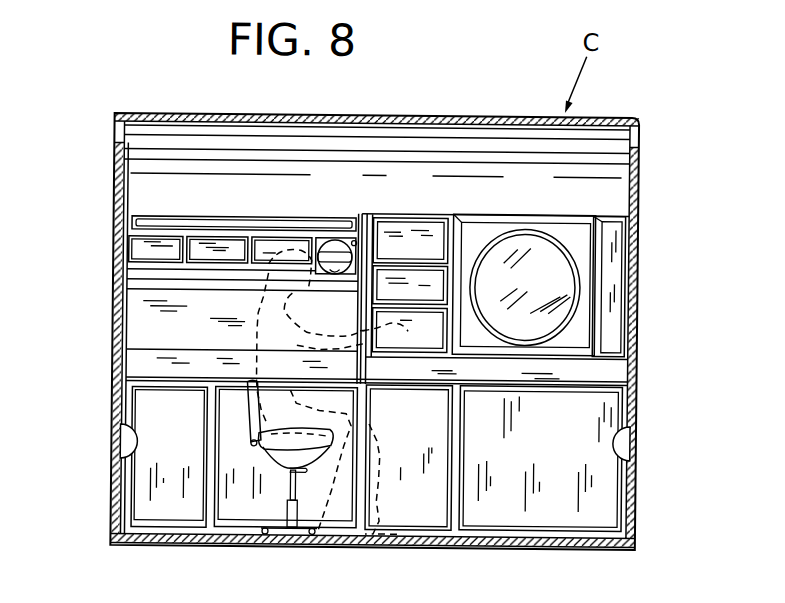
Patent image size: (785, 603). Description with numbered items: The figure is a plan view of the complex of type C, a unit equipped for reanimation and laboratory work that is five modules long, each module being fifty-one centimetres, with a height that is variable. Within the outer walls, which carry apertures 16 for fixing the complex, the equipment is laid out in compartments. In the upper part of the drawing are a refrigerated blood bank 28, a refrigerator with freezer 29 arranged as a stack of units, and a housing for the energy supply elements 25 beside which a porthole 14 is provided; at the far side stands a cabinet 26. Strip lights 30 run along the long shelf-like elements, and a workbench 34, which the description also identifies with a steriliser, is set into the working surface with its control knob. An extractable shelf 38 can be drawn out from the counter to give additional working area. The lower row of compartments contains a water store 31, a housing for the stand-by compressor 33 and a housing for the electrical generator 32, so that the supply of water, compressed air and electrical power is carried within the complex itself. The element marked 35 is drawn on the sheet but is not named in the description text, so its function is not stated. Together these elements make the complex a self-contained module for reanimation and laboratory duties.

The porthole 14 is at (547, 268).
The apertures for fixing complex 16 is at (624, 440).
The housing for the energy supply elements 25 is at (520, 220).
The cabinet 26 is at (611, 325).
The refrigerated blood bank 28 is at (229, 416).
The refrigerator with freezer 29 is at (401, 237).
The strip lights 30 is at (139, 226).
The water store 31 is at (144, 485).
The housing for the electrical generator 32 is at (562, 511).
The housing for the stand-by compressor 33 is at (250, 508).
The workbench 34 is at (334, 245).
The shelf 35 is at (158, 380).
The extractable shelf 38 is at (410, 360).